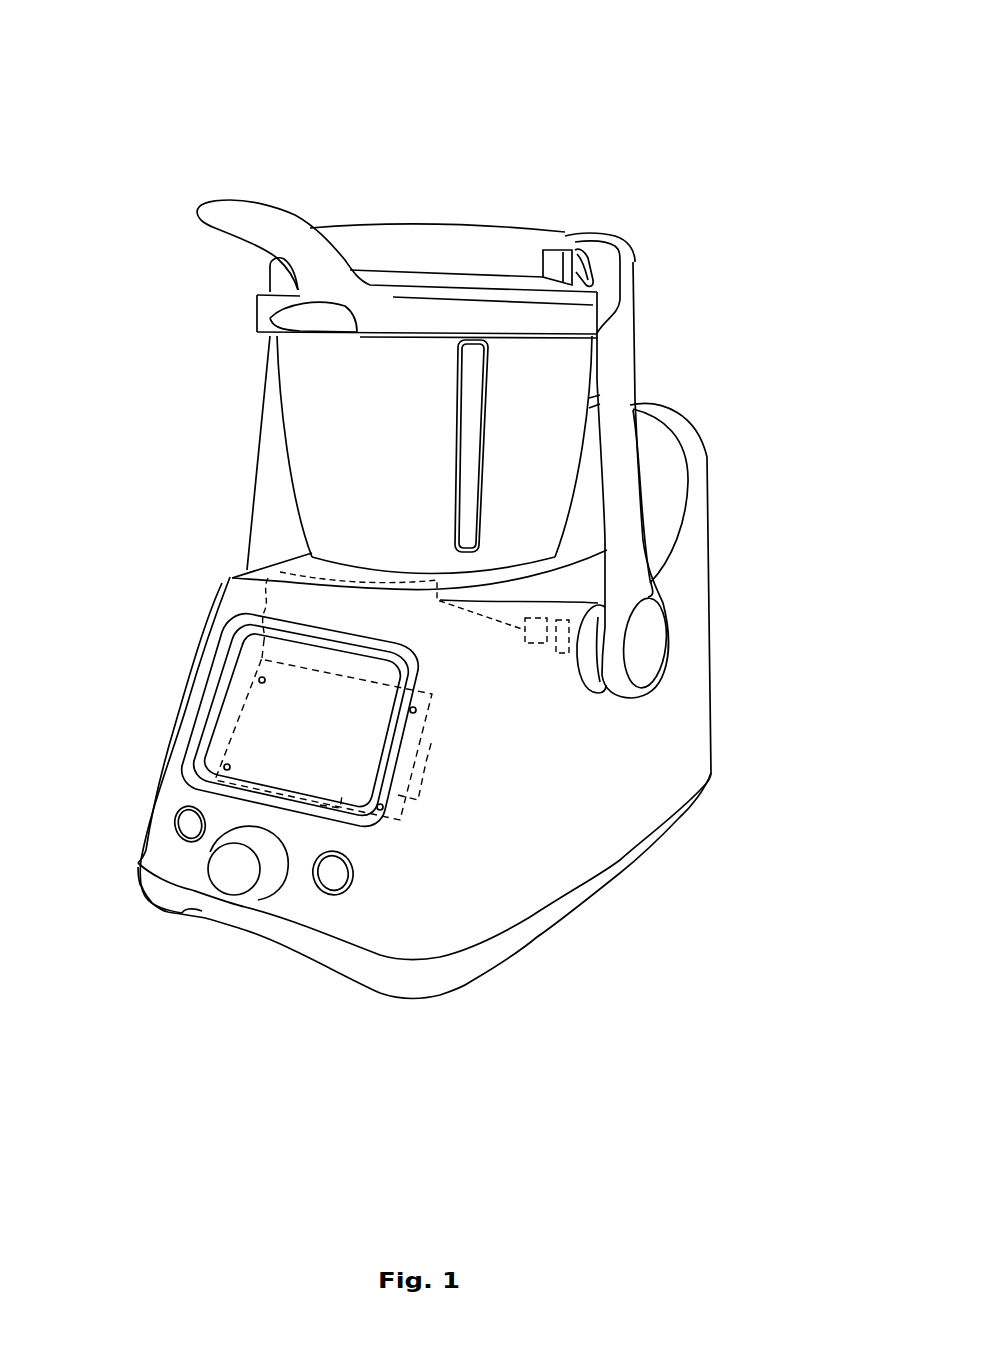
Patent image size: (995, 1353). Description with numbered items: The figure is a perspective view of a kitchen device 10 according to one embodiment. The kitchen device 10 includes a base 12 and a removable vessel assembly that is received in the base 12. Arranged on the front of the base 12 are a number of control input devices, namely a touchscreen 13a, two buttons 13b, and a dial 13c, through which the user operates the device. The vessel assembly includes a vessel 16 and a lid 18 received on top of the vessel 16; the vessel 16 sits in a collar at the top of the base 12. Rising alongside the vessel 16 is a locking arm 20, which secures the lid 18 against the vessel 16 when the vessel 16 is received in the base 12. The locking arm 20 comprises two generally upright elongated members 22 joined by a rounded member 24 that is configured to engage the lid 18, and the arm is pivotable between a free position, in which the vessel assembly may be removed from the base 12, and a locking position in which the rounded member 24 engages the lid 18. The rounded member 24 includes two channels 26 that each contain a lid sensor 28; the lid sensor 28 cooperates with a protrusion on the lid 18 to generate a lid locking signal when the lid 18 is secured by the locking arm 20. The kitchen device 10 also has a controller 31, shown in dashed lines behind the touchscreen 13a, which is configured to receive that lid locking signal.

The kitchen device 10 is at (196, 152).
The base 12 is at (683, 632).
The touchscreen 13a is at (275, 718).
The buttons 13b is at (186, 827).
The dial 13c is at (232, 868).
The vessel 16 is at (330, 431).
The lid 18 is at (443, 245).
The locking arm 20 is at (610, 415).
The elongated members 22 is at (627, 508).
The rounded member 24 is at (633, 238).
The channels 26 is at (572, 238).
The lid sensor 28 is at (587, 258).
The controller 31 is at (415, 745).